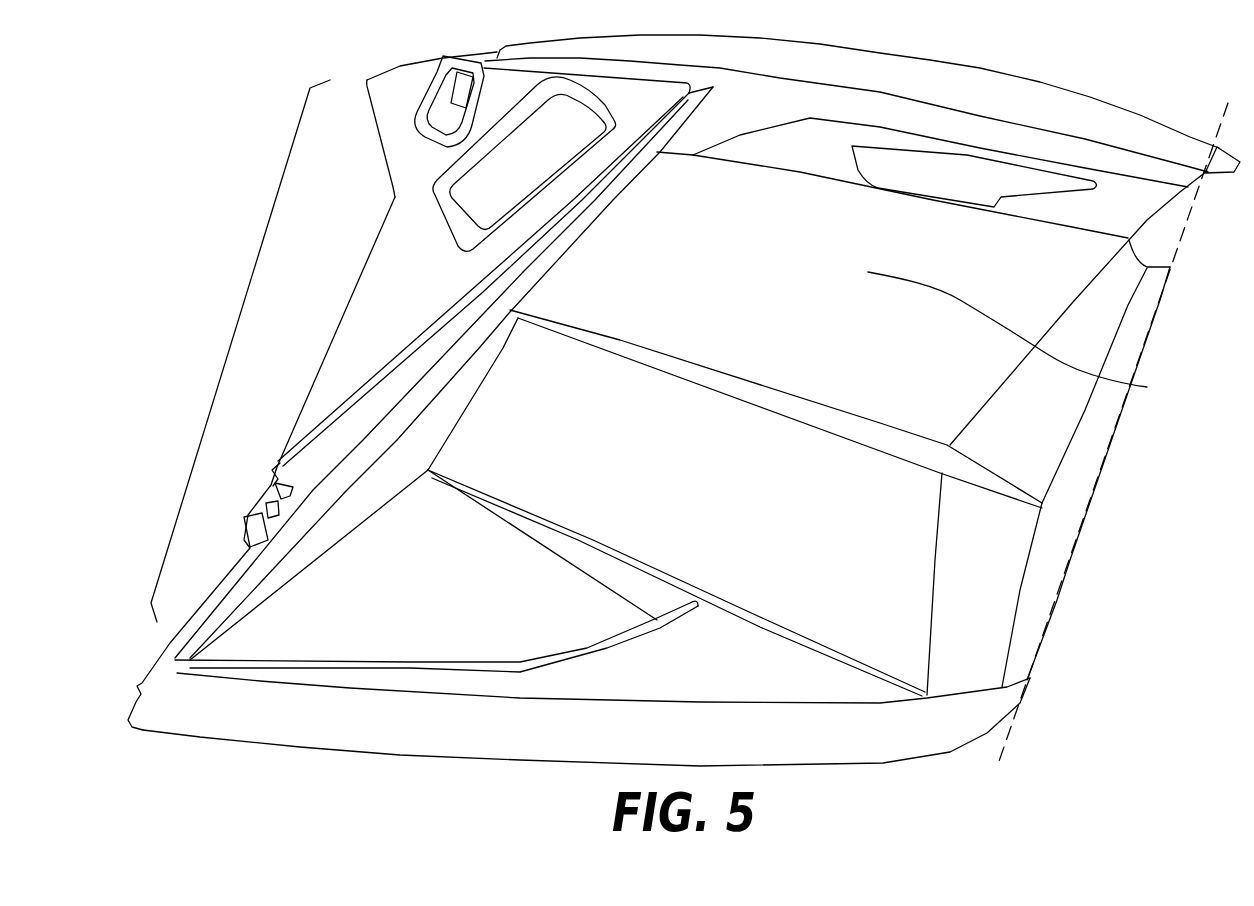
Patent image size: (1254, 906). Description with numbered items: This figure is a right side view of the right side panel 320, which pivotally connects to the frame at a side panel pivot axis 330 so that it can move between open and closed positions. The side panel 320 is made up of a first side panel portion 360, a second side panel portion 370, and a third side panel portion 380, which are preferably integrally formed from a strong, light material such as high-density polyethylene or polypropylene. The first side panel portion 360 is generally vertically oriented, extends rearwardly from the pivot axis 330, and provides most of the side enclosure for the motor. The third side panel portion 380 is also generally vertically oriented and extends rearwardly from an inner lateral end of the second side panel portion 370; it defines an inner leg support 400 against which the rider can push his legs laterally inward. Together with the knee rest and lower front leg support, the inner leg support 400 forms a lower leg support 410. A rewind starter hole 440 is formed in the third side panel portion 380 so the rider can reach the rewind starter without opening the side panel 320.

The right side panel 320 is at (214, 143).
The side panel pivot axis 330 is at (1210, 120).
The first side panel portion 360 is at (1147, 388).
The second side panel portion 370 is at (341, 437).
The third side panel portion 380 is at (410, 219).
The inner leg support 400 is at (433, 287).
The lower leg support 410 is at (223, 365).
The rewind starter hole 440 is at (537, 173).